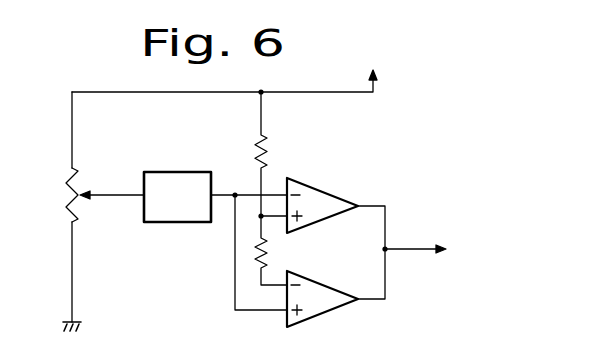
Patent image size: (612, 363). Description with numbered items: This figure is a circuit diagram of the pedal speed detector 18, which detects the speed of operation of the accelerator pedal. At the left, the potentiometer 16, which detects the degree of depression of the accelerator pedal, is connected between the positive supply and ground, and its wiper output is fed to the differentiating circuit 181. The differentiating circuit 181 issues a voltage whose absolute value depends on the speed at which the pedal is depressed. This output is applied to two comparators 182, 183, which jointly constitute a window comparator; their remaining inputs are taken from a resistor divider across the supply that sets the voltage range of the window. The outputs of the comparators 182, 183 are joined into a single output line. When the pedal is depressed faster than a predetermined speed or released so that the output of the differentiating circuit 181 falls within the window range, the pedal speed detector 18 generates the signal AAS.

The potentiometer 16 is at (64, 190).
The pedal speed detector 18 is at (246, 187).
The differentiating circuit 181 is at (176, 227).
The comparator 182 is at (322, 195).
The comparator 183 is at (322, 281).